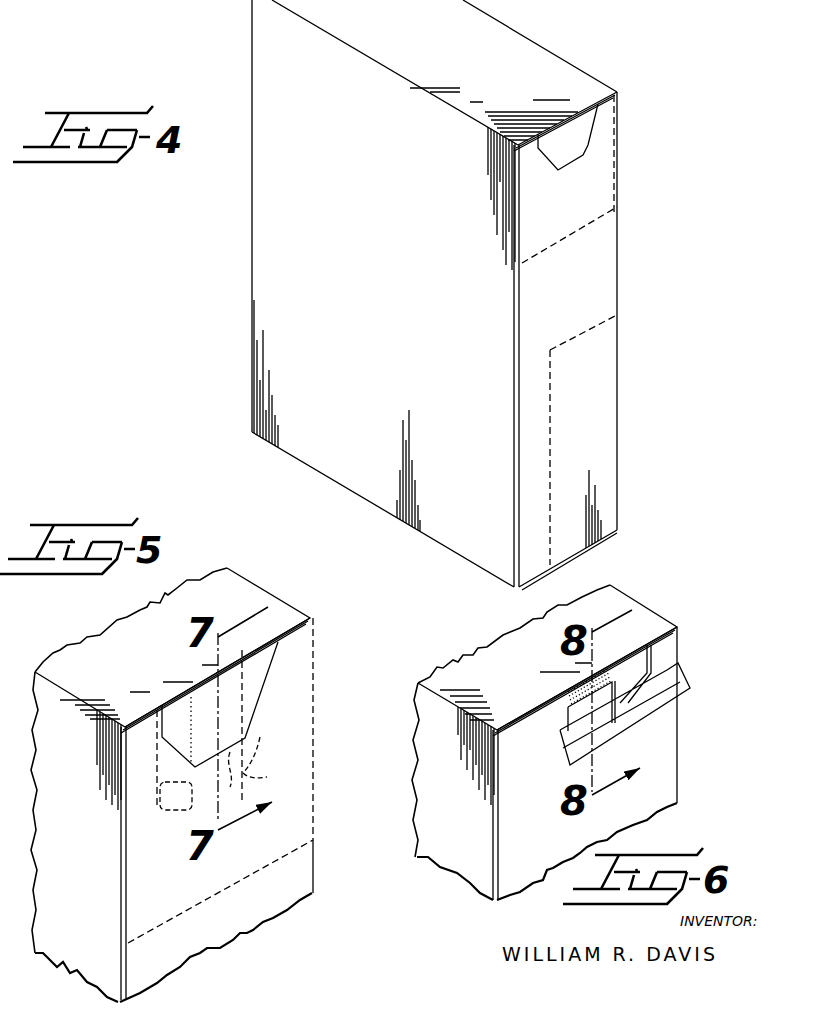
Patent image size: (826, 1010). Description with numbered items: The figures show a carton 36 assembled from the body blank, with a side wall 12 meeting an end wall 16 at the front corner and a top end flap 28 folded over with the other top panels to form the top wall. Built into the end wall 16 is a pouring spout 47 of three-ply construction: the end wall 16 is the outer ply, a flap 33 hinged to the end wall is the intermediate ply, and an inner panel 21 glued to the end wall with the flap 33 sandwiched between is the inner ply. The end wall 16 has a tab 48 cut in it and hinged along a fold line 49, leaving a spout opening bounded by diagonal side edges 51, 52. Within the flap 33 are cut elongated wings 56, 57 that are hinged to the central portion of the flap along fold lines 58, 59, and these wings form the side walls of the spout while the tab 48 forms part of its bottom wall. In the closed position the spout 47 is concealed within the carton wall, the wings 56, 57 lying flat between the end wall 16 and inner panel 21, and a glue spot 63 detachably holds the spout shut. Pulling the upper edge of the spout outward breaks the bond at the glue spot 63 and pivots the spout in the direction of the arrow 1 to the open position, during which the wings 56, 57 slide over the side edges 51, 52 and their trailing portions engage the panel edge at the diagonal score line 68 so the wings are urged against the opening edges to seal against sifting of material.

In FIG. 4, the side wall 12 is at (388, 269).
In FIG. 5, the side wall 12 is at (82, 876).
In FIG. 6, the side wall 12 is at (442, 806).
In FIG. 4, the end wall 16 is at (585, 303).
In FIG. 5, the end wall 16 is at (205, 945).
In FIG. 6, the end wall 16 is at (537, 861).
In FIG. 4, the inner panel 21 is at (565, 345).
In FIG. 4, the top end flap 28 is at (436, 41).
In FIG. 5, the top end flap 28 is at (156, 648).
In FIG. 6, the top end flap 28 is at (516, 666).
In FIG. 4, the flap 33 is at (575, 238).
In FIG. 5, the flap 33 is at (125, 805).
In FIG. 6, the flap 33 is at (490, 822).
In FIG. 4, the carton 36 is at (250, 268).
In FIG. 5, the carton 36 is at (250, 568).
In FIG. 6, the carton 36 is at (628, 590).
In FIG. 4, the pouring spout 47 is at (593, 117).
In FIG. 5, the pouring spout 47 is at (262, 670).
In FIG. 6, the pouring spout 47 is at (690, 688).
In FIG. 4, the tab 48 is at (578, 151).
In FIG. 5, the tab 48 is at (203, 716).
In FIG. 6, the tab 48 is at (645, 760).
In FIG. 4, the fold line 49 is at (571, 167).
In FIG. 5, the fold line 49 is at (230, 787).
In FIG. 6, the fold line 49 is at (600, 740).
In FIG. 4, the diagonal side edge 51 is at (543, 160).
In FIG. 5, the diagonal side edge 51 is at (180, 753).
In FIG. 4, the diagonal side edge 52 is at (588, 146).
In FIG. 5, the diagonal side edge 52 is at (270, 707).
In FIG. 5, the wing 56 is at (172, 812).
In FIG. 6, the wing 56 is at (561, 755).
In FIG. 5, the wing 57 is at (260, 752).
In FIG. 6, the wing 57 is at (668, 665).
In FIG. 5, the fold line 58 is at (163, 795).
In FIG. 5, the fold line 59 is at (262, 775).
In FIG. 6, the glue spot 63 is at (600, 655).
In FIG. 6, the diagonal score line 68 is at (634, 694).
In FIG. 6, the arrow 1 is at (658, 750).